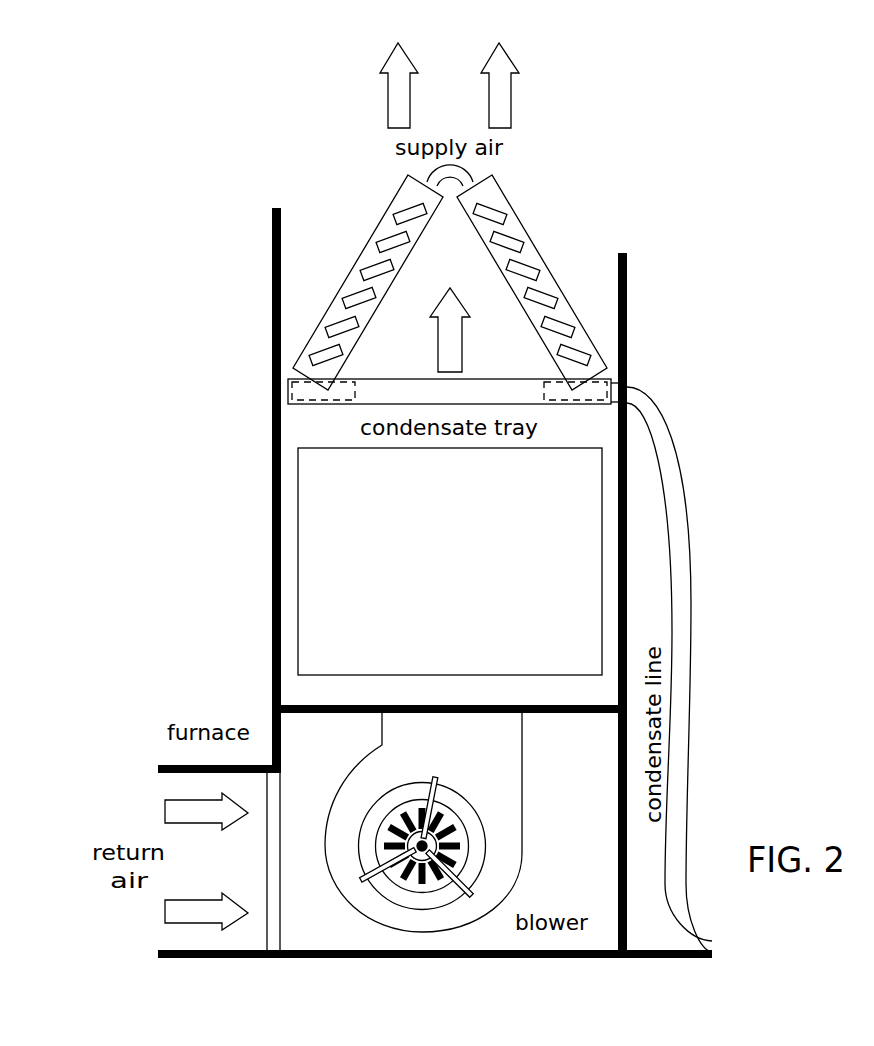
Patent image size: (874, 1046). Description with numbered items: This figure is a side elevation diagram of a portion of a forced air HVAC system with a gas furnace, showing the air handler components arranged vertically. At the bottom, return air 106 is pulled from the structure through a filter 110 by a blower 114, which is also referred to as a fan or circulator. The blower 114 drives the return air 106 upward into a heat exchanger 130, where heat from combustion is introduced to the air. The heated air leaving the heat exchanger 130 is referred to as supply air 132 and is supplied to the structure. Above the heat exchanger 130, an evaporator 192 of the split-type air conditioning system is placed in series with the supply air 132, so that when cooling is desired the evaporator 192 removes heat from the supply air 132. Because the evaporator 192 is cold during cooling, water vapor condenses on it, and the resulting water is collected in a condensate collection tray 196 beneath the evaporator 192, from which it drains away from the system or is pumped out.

The supply air 132 is at (511, 102).
The evaporator 192 is at (363, 250).
The condensate collection tray 196 is at (272, 404).
The heat exchanger 130 is at (298, 587).
The return air 106 is at (193, 824).
The filter 110 is at (268, 917).
The blower 114 is at (522, 853).